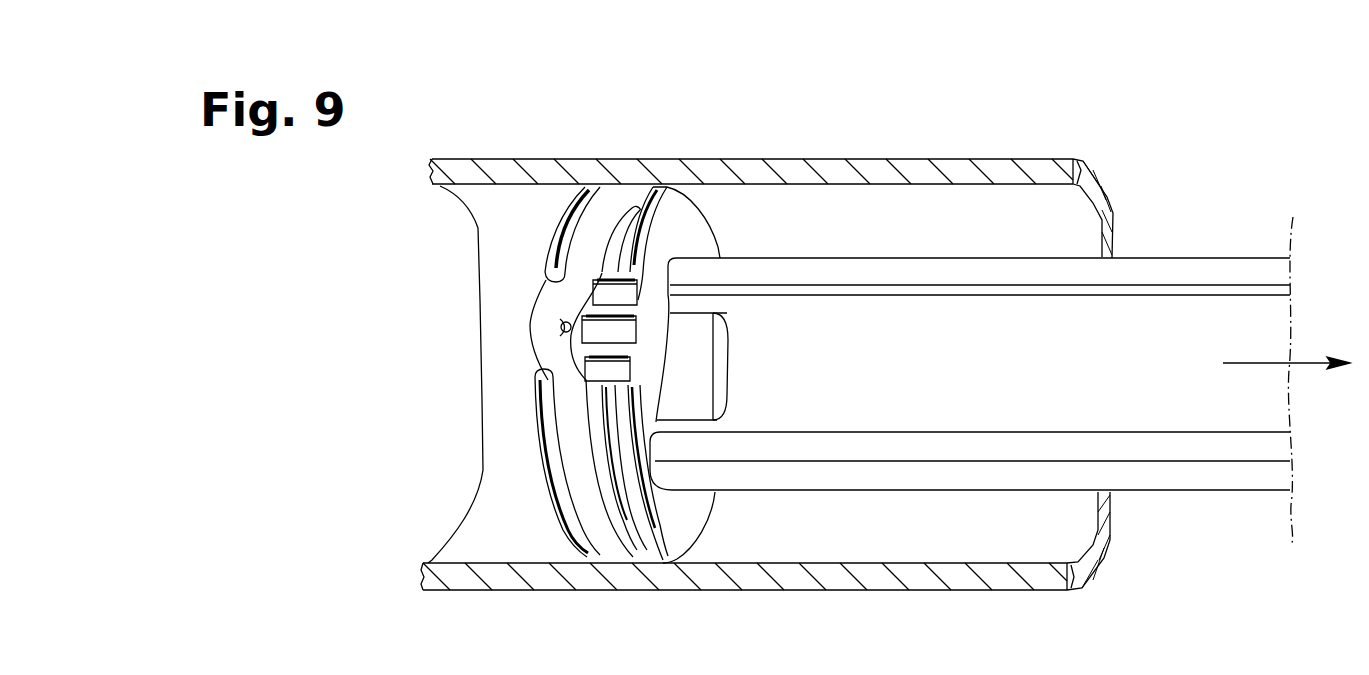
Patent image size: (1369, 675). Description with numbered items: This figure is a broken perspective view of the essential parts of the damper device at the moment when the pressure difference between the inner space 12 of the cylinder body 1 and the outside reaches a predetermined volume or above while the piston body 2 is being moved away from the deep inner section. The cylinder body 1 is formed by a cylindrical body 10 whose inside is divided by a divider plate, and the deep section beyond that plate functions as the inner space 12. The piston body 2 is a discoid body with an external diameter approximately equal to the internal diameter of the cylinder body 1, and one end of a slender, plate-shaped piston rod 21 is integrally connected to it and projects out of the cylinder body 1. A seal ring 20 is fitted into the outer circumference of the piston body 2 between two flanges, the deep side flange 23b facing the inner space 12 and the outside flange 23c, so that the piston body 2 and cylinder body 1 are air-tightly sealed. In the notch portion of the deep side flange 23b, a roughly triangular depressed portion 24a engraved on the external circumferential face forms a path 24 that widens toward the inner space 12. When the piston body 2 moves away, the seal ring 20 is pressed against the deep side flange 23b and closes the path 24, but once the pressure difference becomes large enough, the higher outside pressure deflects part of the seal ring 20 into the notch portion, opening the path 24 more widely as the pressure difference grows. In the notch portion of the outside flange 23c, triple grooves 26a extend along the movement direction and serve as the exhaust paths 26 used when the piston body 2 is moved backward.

The cylinder body 1 is at (767, 335).
The cylindrical body 10 is at (907, 168).
The inner space 12 is at (503, 207).
The piston body 2 is at (678, 364).
The seal ring 20 is at (617, 193).
The piston rod 21 is at (1153, 259).
The deep side flange 23b is at (572, 195).
The outside flange 23c is at (659, 188).
The path 24 is at (460, 330).
The depressed portion 24a is at (562, 328).
The exhaust paths 26 is at (725, 331).
The triple grooves 26a is at (636, 294).